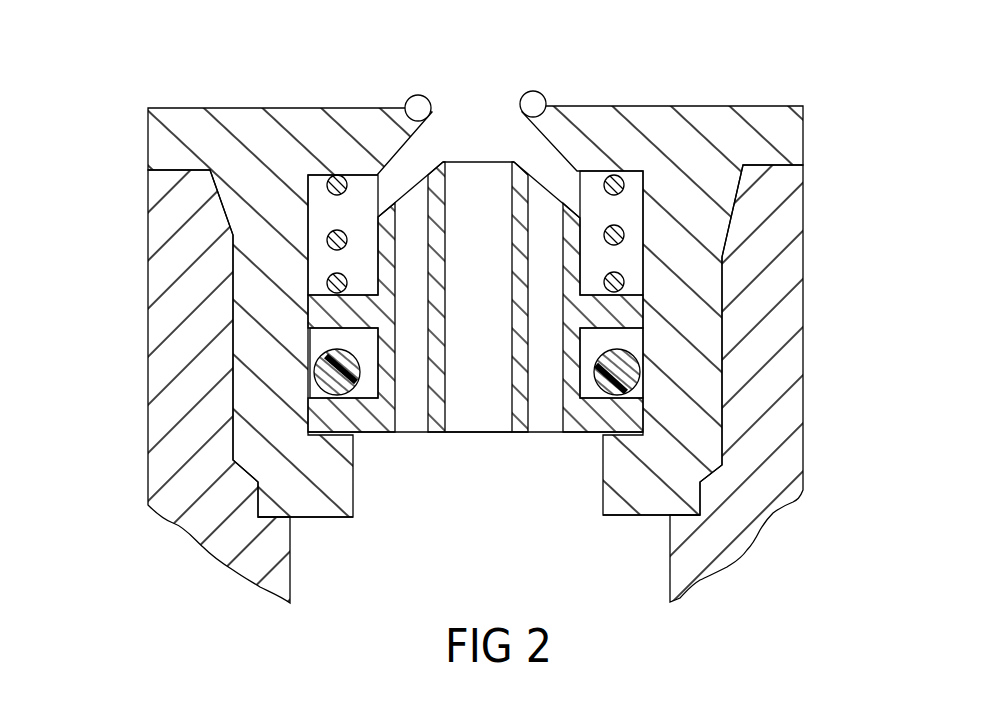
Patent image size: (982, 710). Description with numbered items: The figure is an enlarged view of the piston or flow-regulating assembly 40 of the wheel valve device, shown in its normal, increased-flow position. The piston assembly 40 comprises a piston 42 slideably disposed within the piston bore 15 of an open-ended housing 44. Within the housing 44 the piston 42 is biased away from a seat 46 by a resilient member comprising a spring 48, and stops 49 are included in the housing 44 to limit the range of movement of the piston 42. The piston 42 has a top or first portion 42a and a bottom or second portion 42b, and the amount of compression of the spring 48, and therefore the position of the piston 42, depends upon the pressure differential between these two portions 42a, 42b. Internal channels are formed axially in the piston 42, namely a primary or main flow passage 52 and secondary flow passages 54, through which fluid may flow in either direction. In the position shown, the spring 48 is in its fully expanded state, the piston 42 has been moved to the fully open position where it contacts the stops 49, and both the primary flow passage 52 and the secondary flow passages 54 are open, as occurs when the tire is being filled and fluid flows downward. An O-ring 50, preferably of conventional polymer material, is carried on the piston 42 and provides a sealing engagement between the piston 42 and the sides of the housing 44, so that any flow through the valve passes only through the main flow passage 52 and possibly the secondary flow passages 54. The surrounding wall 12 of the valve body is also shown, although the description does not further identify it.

The housing wall 12 is at (158, 482).
The piston bore 15 is at (322, 210).
The piston or flow-regulating assembly 40 is at (812, 78).
The piston 42 is at (593, 431).
The top or first portion 42a is at (517, 160).
The bottom or second portion 42b is at (459, 432).
The open-ended housing 44 is at (263, 130).
The seat 46 is at (413, 145).
The spring 48 is at (333, 177).
The stops 49 is at (327, 513).
The O-ring 50 is at (322, 365).
The primary or main flow passage 52 is at (498, 274).
The secondary flow passages 54 is at (410, 420).